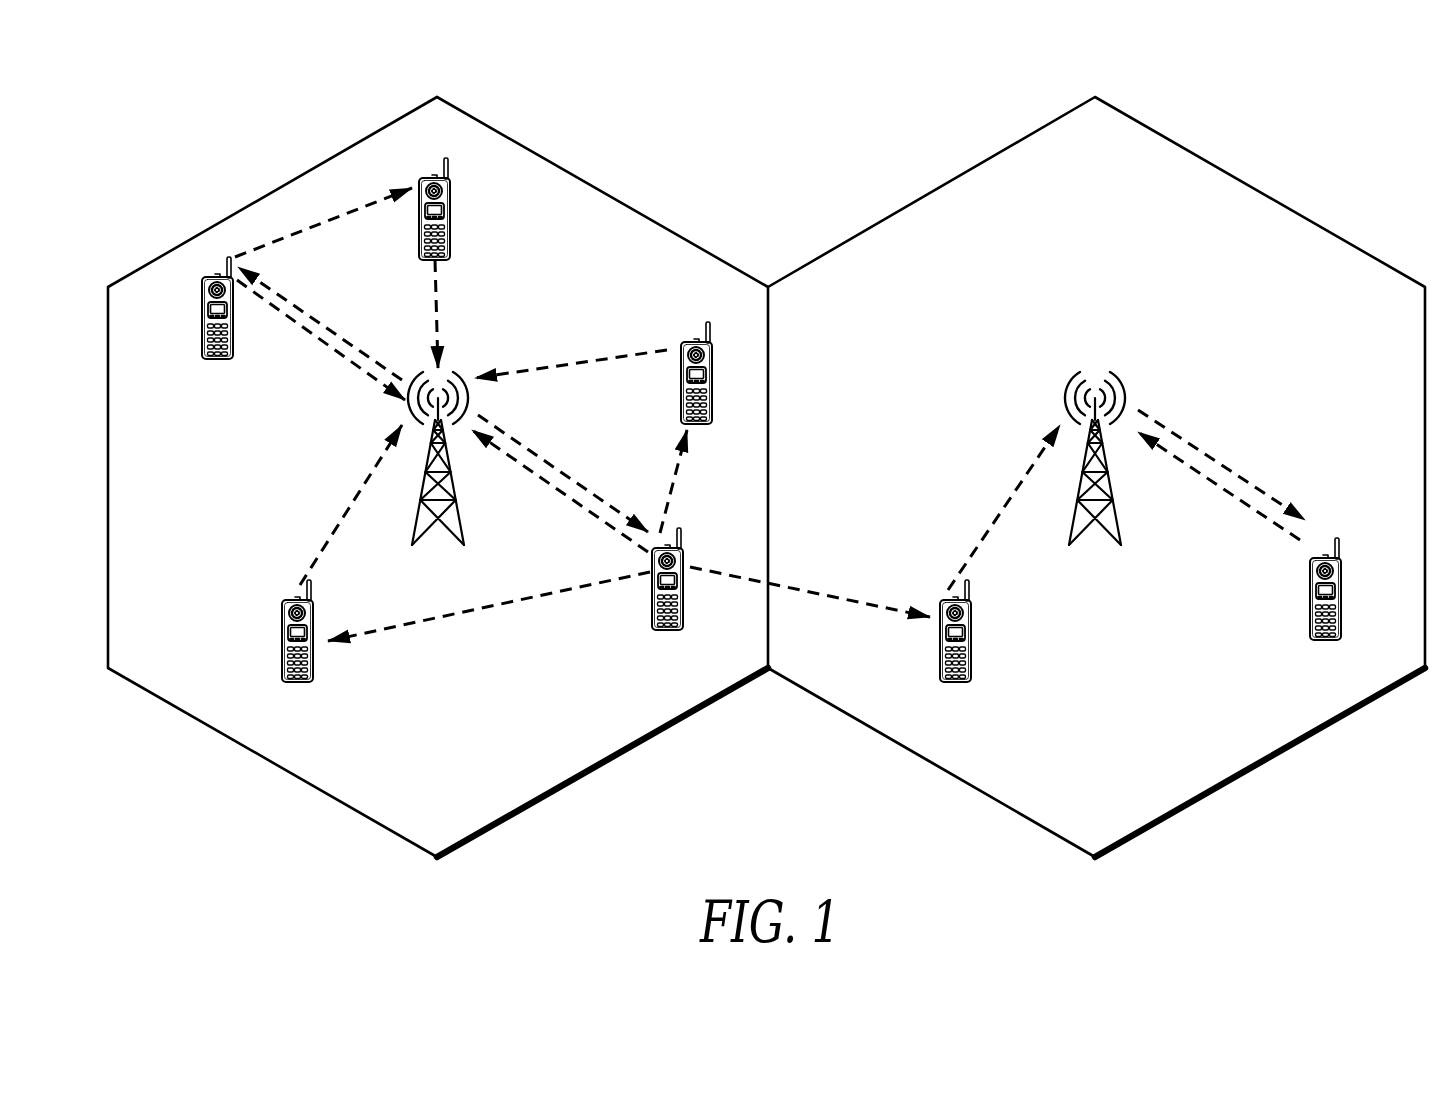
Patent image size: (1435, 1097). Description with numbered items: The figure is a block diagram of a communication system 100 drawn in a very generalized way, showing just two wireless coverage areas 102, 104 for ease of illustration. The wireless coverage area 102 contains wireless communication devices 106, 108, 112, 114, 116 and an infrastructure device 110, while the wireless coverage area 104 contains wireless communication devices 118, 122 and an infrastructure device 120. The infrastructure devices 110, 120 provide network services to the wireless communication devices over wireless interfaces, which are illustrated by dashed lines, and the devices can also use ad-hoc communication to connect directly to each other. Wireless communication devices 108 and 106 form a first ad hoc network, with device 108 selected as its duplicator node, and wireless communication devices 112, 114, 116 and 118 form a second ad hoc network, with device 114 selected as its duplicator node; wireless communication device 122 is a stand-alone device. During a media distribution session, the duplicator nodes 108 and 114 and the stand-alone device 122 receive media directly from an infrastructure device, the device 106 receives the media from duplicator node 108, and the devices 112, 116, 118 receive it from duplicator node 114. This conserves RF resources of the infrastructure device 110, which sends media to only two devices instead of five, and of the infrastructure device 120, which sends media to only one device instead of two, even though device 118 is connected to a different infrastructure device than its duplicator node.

The communication system 100 is at (1432, 118).
The wireless coverage area 102 is at (276, 191).
The wireless coverage area 104 is at (934, 190).
The wireless communication device 106 is at (451, 216).
The wireless communication device 108 is at (201, 318).
The infrastructure device 110 is at (457, 529).
The wireless communication device 112 is at (281, 638).
The wireless communication device 114 is at (651, 610).
The wireless communication device 116 is at (680, 380).
The wireless communication device 118 is at (939, 648).
The infrastructure device 120 is at (1117, 523).
The wireless communication device 122 is at (1309, 602).